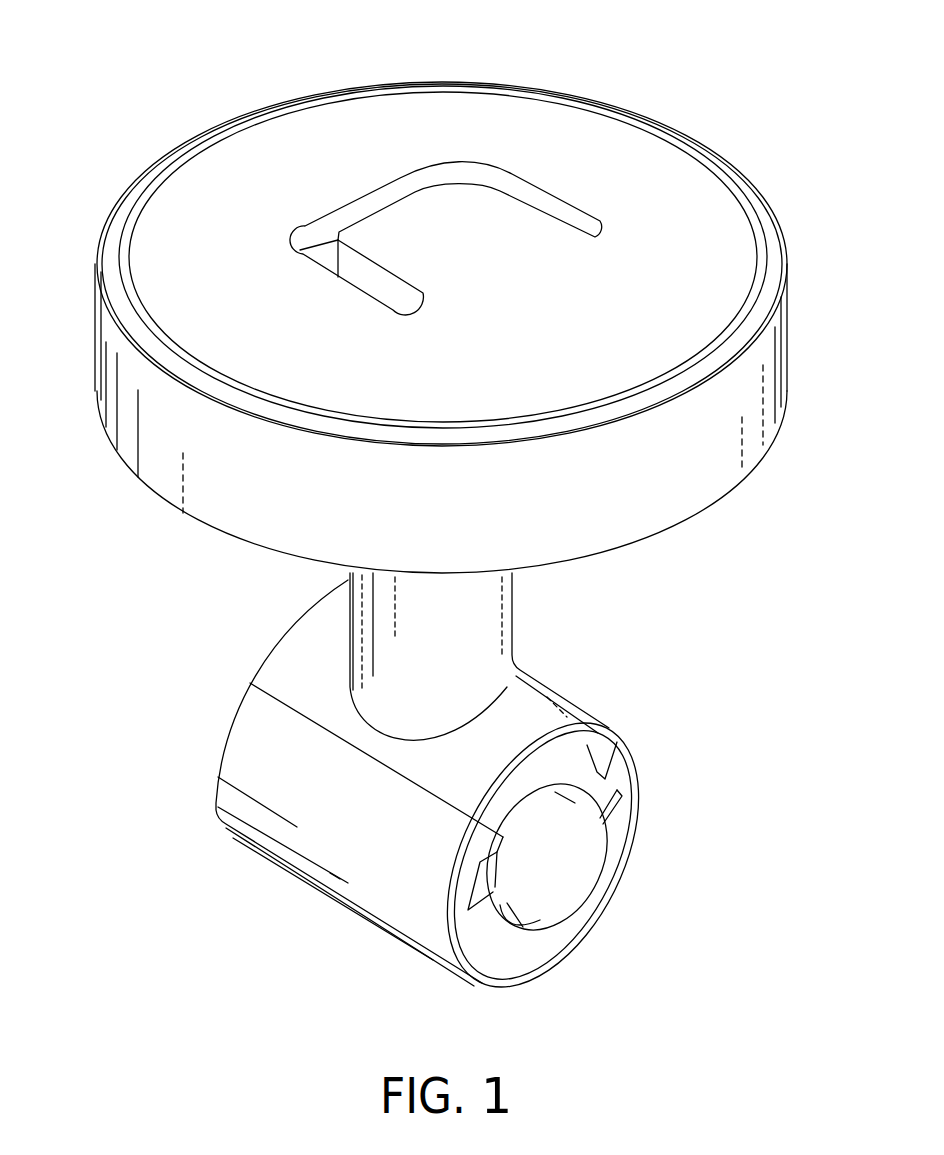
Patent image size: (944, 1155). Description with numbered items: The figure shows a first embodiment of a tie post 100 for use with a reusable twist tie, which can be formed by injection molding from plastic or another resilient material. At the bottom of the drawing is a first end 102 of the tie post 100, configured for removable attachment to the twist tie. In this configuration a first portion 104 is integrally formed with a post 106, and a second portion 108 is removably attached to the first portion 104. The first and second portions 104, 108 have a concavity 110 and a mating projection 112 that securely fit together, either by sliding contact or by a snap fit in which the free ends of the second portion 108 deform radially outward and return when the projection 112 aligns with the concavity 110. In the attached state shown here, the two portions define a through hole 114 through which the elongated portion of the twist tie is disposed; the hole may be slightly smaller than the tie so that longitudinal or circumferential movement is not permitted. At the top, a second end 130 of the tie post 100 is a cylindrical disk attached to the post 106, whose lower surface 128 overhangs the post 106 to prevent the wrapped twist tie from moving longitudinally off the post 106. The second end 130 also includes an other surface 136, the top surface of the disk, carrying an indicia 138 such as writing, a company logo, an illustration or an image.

The tie post 100 is at (118, 52).
The first end 102 is at (684, 744).
The first portion 104 is at (598, 746).
The post 106 is at (515, 612).
The second portion 108 is at (622, 858).
The concavity 110 is at (478, 870).
The mating projection 112 is at (600, 772).
The through hole 114 is at (577, 882).
The surface 128 is at (717, 497).
The second end 130 is at (804, 289).
The other surface 136 is at (569, 125).
The indicia 138 is at (400, 177).